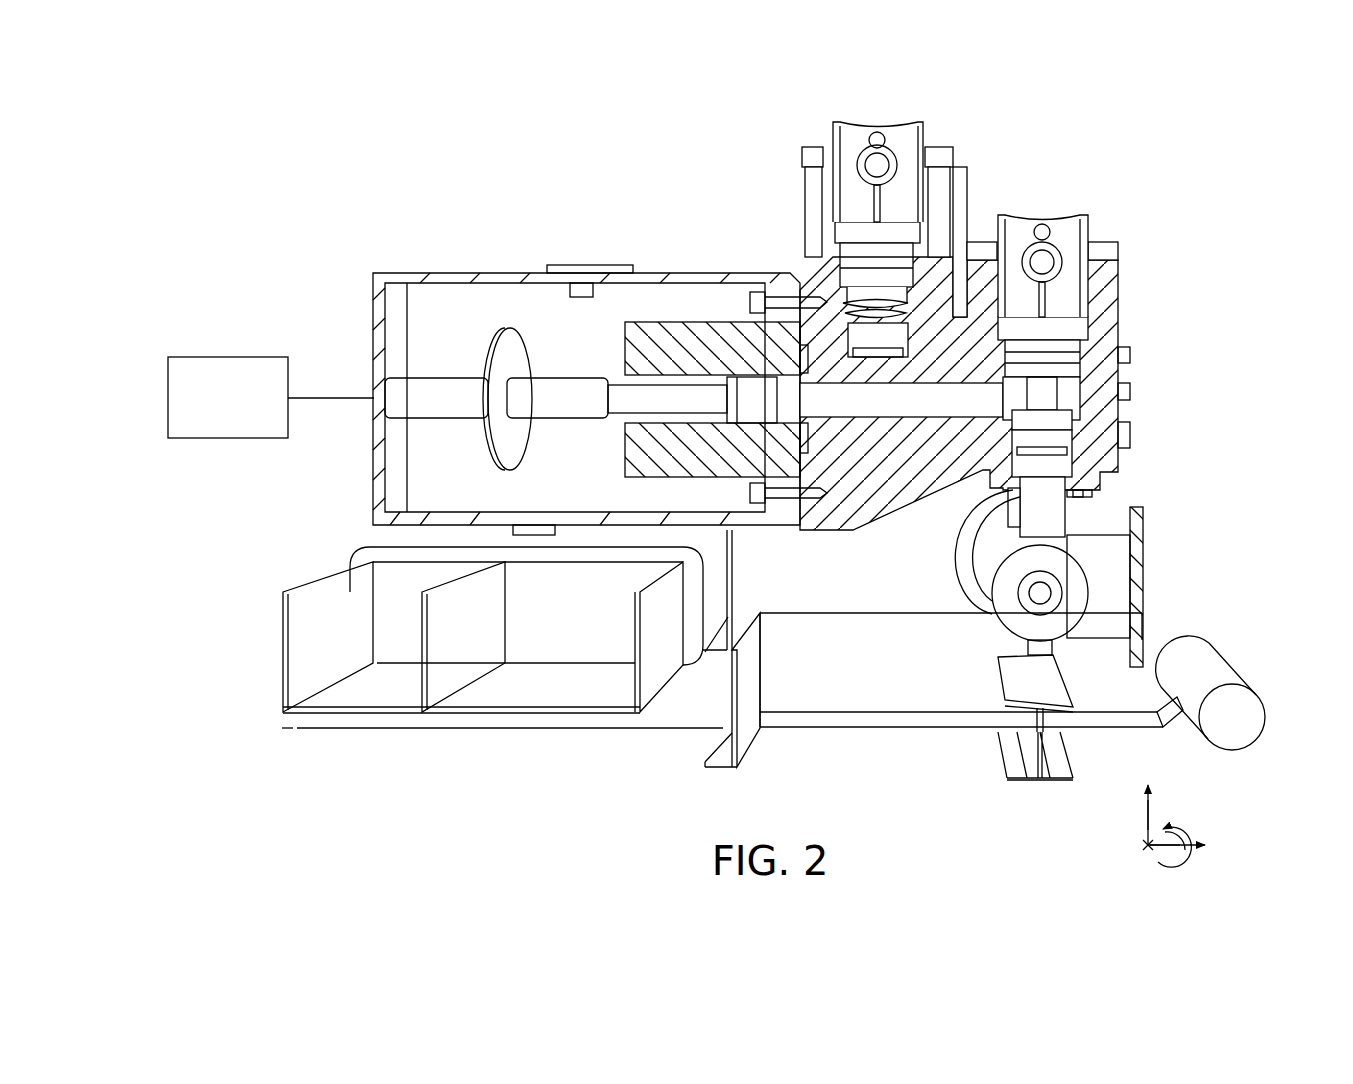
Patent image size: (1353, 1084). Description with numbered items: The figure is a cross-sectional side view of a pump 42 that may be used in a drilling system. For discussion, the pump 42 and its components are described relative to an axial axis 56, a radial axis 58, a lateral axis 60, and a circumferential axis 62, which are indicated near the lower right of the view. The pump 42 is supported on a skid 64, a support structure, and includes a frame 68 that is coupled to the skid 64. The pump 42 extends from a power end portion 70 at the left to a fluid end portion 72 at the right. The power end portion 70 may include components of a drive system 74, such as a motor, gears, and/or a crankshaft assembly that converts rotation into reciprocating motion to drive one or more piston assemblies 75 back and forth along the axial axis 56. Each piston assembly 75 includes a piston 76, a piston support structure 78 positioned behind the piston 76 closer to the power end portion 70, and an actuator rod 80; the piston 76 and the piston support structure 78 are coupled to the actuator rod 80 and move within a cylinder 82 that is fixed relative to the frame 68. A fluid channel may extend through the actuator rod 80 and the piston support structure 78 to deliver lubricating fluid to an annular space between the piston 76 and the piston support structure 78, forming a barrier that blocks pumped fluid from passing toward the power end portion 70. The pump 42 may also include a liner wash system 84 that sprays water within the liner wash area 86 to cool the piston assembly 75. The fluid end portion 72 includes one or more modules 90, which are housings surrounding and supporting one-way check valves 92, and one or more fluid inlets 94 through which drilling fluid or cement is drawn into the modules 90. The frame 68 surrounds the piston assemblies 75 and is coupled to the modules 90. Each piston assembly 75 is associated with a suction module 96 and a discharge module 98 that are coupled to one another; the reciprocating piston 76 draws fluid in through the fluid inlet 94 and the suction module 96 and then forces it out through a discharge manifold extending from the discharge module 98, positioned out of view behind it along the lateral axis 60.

The pump 42 is at (671, 195).
The axial axis 56 is at (1162, 865).
The radial axis 58 is at (1148, 825).
The lateral axis 60 is at (1147, 845).
The circumferential axis 62 is at (1166, 829).
The skid 64 is at (897, 727).
The frame 68 is at (714, 273).
The power end portion 70 is at (272, 275).
The fluid end portion 72 is at (1157, 310).
The drive system 74 is at (229, 357).
The piston assembly 75 is at (722, 353).
The piston 76 is at (765, 402).
The piston support structure 78 is at (729, 396).
The actuator rod 80 is at (618, 404).
The cylinder 82 is at (626, 322).
The liner wash system 84 is at (579, 299).
The liner wash area 86 is at (546, 310).
The module 90 is at (996, 313).
The valve 92 is at (945, 121).
The fluid inlet 94 is at (1145, 585).
The suction module 96 is at (1125, 277).
The discharge module 98 is at (794, 197).